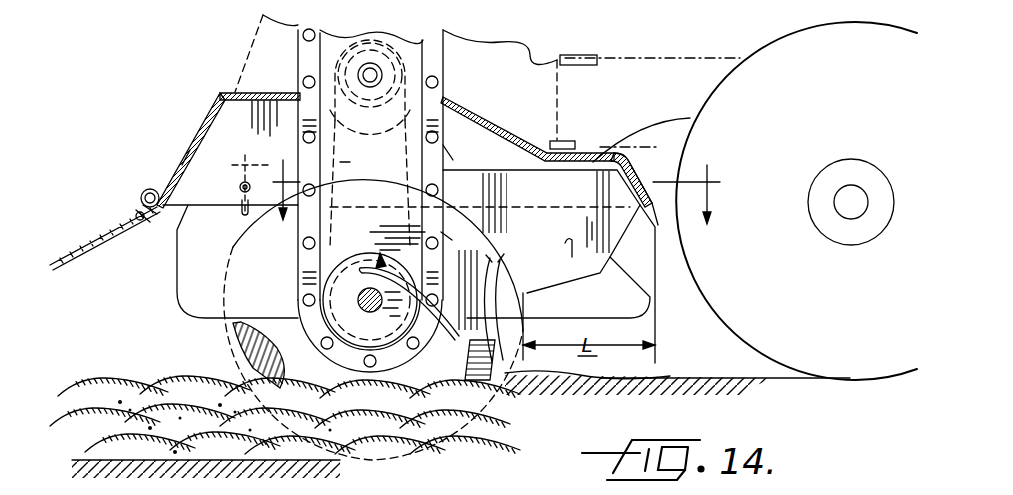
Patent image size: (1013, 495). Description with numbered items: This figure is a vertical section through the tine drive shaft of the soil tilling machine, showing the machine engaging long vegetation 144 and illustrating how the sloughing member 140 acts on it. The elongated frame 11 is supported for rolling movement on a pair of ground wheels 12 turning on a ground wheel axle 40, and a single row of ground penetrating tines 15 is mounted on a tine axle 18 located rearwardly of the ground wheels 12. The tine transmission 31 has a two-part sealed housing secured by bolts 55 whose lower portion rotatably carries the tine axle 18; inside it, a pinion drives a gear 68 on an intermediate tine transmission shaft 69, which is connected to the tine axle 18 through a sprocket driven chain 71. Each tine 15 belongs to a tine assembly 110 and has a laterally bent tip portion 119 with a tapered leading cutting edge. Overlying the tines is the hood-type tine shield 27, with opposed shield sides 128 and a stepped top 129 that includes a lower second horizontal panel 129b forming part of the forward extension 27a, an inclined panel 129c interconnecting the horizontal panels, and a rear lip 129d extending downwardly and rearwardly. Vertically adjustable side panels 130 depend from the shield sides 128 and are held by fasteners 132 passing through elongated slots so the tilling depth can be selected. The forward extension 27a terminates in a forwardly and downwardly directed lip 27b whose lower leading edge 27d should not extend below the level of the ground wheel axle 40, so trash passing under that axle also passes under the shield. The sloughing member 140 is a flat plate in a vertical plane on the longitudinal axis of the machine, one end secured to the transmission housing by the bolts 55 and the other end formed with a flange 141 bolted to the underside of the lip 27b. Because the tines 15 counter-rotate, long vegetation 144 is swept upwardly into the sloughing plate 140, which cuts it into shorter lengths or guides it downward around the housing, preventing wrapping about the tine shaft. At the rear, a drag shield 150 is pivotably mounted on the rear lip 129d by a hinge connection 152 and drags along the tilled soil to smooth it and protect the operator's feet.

The frame 11 is at (600, 60).
The ground wheels 12 is at (768, 40).
The tines 15 is at (175, 325).
The tine axle 18 is at (360, 297).
The tine shield 27 is at (203, 104).
The forward extension 27a is at (628, 150).
The lip 27b is at (657, 147).
The lower leading edge 27d is at (655, 215).
The tine transmission 31 is at (449, 99).
The ground wheel axle 40 is at (851, 219).
The bolts 55 is at (442, 135).
The gear 68 is at (443, 48).
The intermediate tine transmission shaft 69 is at (362, 74).
The sprocket driven chain 71 is at (300, 93).
The tine assemblies 110 is at (405, 447).
The tip portion 119 is at (232, 352).
The shield sides 128 is at (213, 207).
The shield top 129 is at (237, 95).
The second horizontal panel 129b is at (625, 152).
The inclined panel 129c is at (512, 127).
The rear lip 129d is at (187, 157).
The side panels 130 is at (178, 278).
The fasteners 132 is at (245, 182).
The sloughing member 140 is at (652, 305).
The flange 141 is at (632, 176).
The long vegetation 144 is at (470, 278).
The drag shield 150 is at (85, 247).
The hinge connection 152 is at (150, 190).